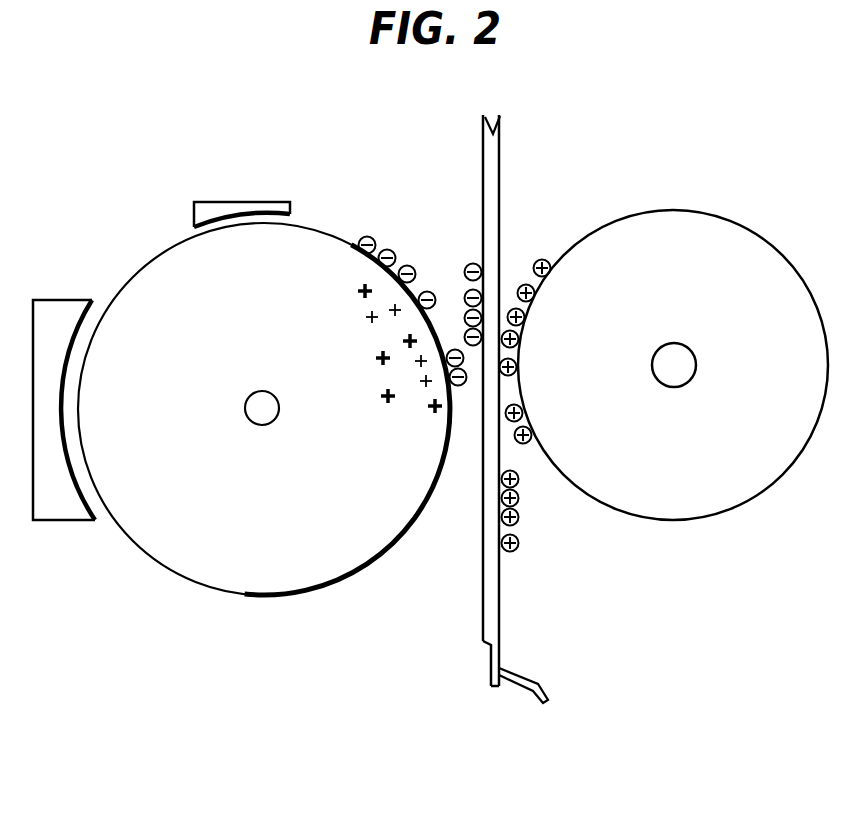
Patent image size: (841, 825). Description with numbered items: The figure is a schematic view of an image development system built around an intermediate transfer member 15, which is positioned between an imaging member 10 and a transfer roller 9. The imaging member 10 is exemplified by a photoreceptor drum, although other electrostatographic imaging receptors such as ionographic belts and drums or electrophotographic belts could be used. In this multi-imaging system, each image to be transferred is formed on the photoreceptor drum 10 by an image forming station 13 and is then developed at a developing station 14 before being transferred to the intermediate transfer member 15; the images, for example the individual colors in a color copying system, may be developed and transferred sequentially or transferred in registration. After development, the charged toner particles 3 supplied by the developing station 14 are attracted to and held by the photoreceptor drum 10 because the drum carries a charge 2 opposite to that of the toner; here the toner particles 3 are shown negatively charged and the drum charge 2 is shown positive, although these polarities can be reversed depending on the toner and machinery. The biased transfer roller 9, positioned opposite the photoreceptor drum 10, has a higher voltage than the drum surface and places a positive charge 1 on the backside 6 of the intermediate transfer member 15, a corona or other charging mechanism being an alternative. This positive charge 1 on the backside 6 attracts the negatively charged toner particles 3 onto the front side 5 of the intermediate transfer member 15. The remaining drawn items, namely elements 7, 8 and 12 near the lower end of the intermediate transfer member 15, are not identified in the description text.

The positive charge 1 is at (545, 262).
The charge 2 is at (365, 288).
The toner particles 3 is at (371, 238).
The front side 5 is at (483, 190).
The backside 6 is at (502, 142).
The belt base layer end 7 is at (488, 647).
The cleaning blade 8 is at (492, 673).
The transfer roller 9 is at (643, 497).
The imaging member 10 is at (178, 542).
The toner collecting chute 12 is at (531, 691).
The image forming station 13 is at (59, 308).
The developing station 14 is at (221, 211).
The intermediate transfer member 15 is at (494, 218).